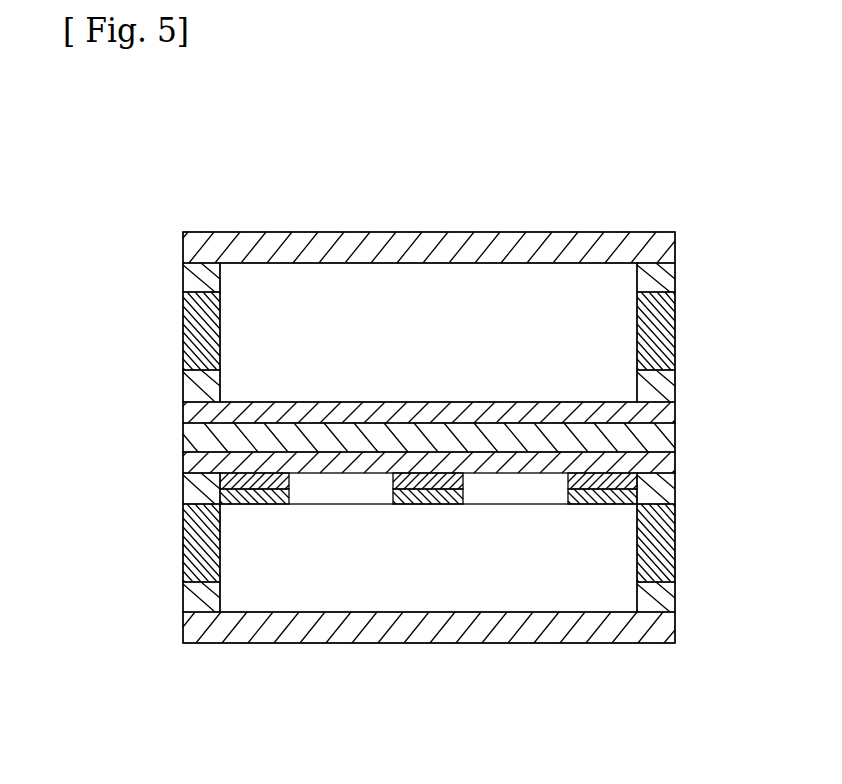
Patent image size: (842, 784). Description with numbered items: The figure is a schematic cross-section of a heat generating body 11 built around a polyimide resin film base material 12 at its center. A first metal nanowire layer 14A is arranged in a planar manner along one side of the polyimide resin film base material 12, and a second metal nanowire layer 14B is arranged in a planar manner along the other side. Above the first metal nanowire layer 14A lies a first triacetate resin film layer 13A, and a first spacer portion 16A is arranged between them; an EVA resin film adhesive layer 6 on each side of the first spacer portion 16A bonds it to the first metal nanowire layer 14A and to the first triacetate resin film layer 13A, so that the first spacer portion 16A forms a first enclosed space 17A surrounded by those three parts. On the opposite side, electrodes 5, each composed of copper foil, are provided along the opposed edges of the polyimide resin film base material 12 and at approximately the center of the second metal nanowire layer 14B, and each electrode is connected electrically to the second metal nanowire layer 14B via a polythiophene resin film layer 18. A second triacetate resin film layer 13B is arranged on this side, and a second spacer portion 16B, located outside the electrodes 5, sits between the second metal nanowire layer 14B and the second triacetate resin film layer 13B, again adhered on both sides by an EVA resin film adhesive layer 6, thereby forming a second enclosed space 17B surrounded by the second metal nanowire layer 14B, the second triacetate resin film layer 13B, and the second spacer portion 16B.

The heat generating body 11 is at (683, 155).
The polyimide resin film base material 12 is at (185, 440).
The first triacetate resin film layer 13A is at (403, 248).
The second triacetate resin film layer 13B is at (333, 641).
The first metal nanowire layer 14A is at (675, 412).
The second metal nanowire layer 14B is at (675, 462).
The first spacer portion 16A is at (185, 335).
The second spacer portion 16B is at (185, 556).
The first enclosed space 17A is at (497, 296).
The second enclosed space 17B is at (497, 584).
The polythiophene resin film layer 18 is at (256, 472).
The electrodes 5 is at (255, 504).
The EVA resin film adhesive layer 6 is at (185, 280).